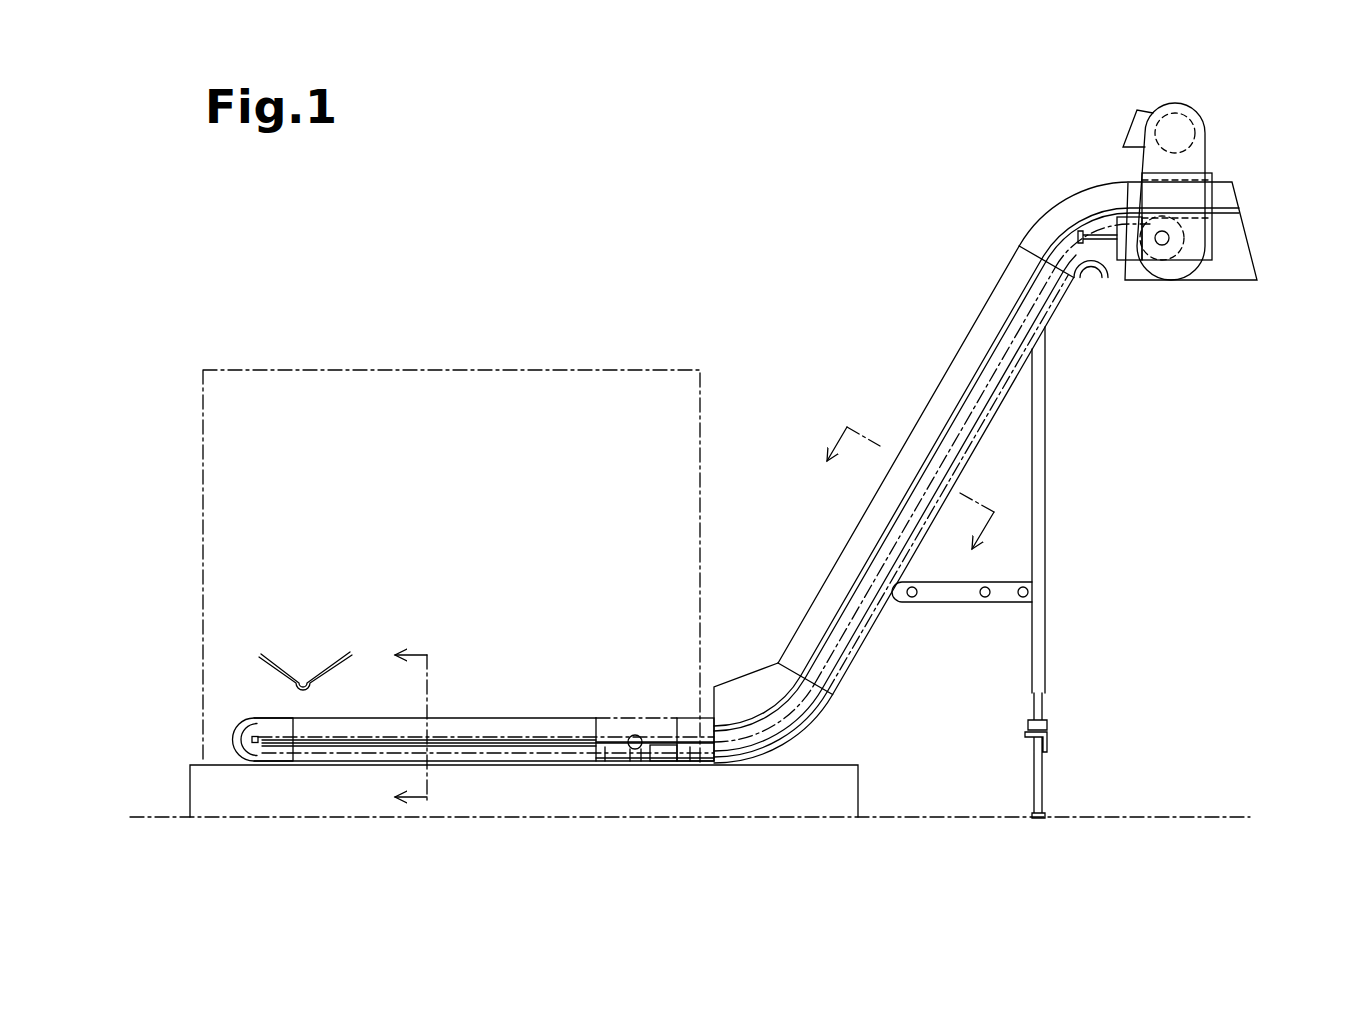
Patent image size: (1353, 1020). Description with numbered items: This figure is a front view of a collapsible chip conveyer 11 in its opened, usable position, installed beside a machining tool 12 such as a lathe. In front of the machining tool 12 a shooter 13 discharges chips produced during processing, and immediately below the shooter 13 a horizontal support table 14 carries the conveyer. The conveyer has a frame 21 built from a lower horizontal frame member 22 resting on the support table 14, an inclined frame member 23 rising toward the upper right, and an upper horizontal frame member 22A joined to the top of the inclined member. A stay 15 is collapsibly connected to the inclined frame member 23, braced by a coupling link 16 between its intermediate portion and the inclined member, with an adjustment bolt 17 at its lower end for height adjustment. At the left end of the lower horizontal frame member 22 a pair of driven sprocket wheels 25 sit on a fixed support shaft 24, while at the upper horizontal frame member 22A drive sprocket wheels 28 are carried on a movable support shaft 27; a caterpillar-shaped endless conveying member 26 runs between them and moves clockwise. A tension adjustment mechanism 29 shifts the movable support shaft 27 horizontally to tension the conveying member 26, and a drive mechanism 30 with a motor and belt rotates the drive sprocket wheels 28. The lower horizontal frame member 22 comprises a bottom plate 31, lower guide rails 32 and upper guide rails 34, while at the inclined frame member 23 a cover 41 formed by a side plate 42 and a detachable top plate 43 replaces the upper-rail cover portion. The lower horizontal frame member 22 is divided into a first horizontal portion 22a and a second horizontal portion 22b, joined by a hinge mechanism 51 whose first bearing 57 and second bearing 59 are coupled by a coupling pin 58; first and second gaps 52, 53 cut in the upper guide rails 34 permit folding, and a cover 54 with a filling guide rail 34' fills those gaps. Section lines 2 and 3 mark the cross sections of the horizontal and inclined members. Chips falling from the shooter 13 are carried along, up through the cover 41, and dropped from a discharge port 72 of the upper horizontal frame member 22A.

The section line 2- 2 is at (394, 727).
The section line 3- 3 is at (902, 501).
The chip conveyer 11 is at (914, 394).
The machining tool 12 is at (517, 370).
The shooter 13 is at (333, 656).
The support table 14 is at (838, 765).
The stay 15 is at (1046, 510).
The coupling link 16 is at (963, 603).
The adjustment bolt 17 is at (1044, 778).
The frame 21 is at (858, 665).
The lower horizontal frame member 22 is at (492, 711).
The first horizontal portion 22a is at (322, 748).
The second horizontal portion 22b is at (695, 768).
The upper horizontal frame member 22A is at (1240, 180).
The inclined frame member 23 is at (990, 437).
The fixed support shaft 24 is at (246, 722).
The driven sprocket wheels 25 is at (268, 750).
The conveying member 26 is at (1088, 282).
The movable support shaft 27 is at (1160, 251).
The drive sprocket wheels 28 is at (1183, 265).
The tension adjustment mechanism 29 is at (1125, 210).
The drive mechanism 30 is at (1208, 102).
The bottom plate 31 is at (528, 748).
The lower guide rails 32 is at (522, 757).
The upper guide rails 34 is at (654, 499).
The filling guide rail 34' is at (732, 781).
The cover 41 is at (814, 588).
The side plate 42 is at (730, 692).
The top plate 43 is at (752, 668).
The hinge mechanism 51 is at (614, 697).
The first gap 52 is at (604, 716).
The second gap 53 is at (683, 717).
The cover 54 is at (592, 712).
The first bearing 57 is at (690, 762).
The coupling pin 58 is at (635, 752).
The second bearing 59 is at (598, 760).
The discharge port 72 is at (1262, 283).